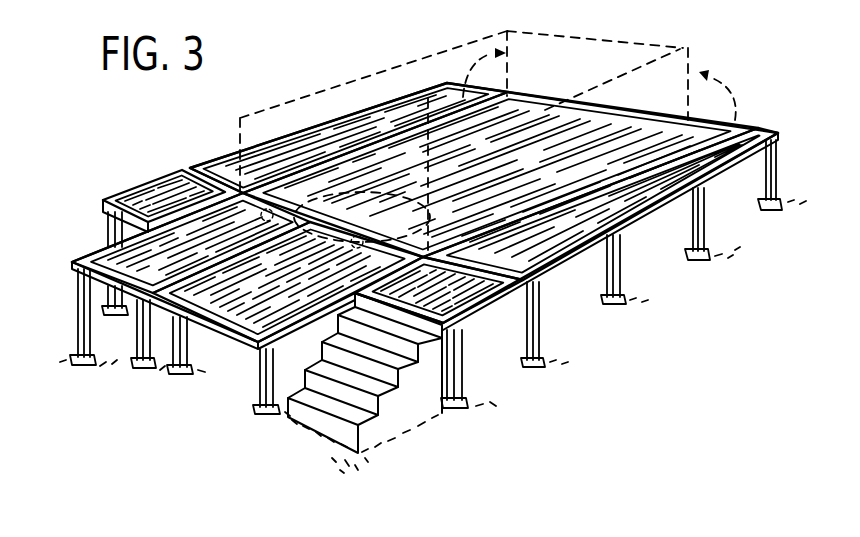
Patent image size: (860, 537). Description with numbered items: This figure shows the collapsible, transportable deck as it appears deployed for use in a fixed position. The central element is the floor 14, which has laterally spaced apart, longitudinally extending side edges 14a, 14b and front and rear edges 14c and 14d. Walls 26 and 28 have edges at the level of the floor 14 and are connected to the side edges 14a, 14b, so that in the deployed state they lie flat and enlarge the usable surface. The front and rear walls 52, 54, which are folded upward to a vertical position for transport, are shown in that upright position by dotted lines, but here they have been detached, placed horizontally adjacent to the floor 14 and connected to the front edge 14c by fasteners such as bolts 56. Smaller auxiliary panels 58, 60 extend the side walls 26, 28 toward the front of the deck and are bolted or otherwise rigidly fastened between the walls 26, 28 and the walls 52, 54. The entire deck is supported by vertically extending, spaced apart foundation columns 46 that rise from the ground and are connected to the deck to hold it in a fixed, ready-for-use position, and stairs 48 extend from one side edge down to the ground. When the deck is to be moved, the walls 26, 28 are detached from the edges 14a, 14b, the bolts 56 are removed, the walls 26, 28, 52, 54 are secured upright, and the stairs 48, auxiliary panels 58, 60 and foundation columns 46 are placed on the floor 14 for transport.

The floor 14 is at (603, 127).
The side edge 14a is at (540, 200).
The side edge 14b is at (322, 164).
The front edge 14c is at (300, 213).
The rear edge 14d is at (570, 102).
The wall 26 is at (642, 182).
The wall 28 is at (370, 74).
The foundation columns 46 is at (170, 362).
The stairs 48 is at (337, 393).
The front wall 52 is at (287, 128).
The rear wall 54 is at (233, 310).
The bolts 56 is at (368, 193).
The auxiliary panel 58 is at (143, 188).
The auxiliary panel 60 is at (458, 293).